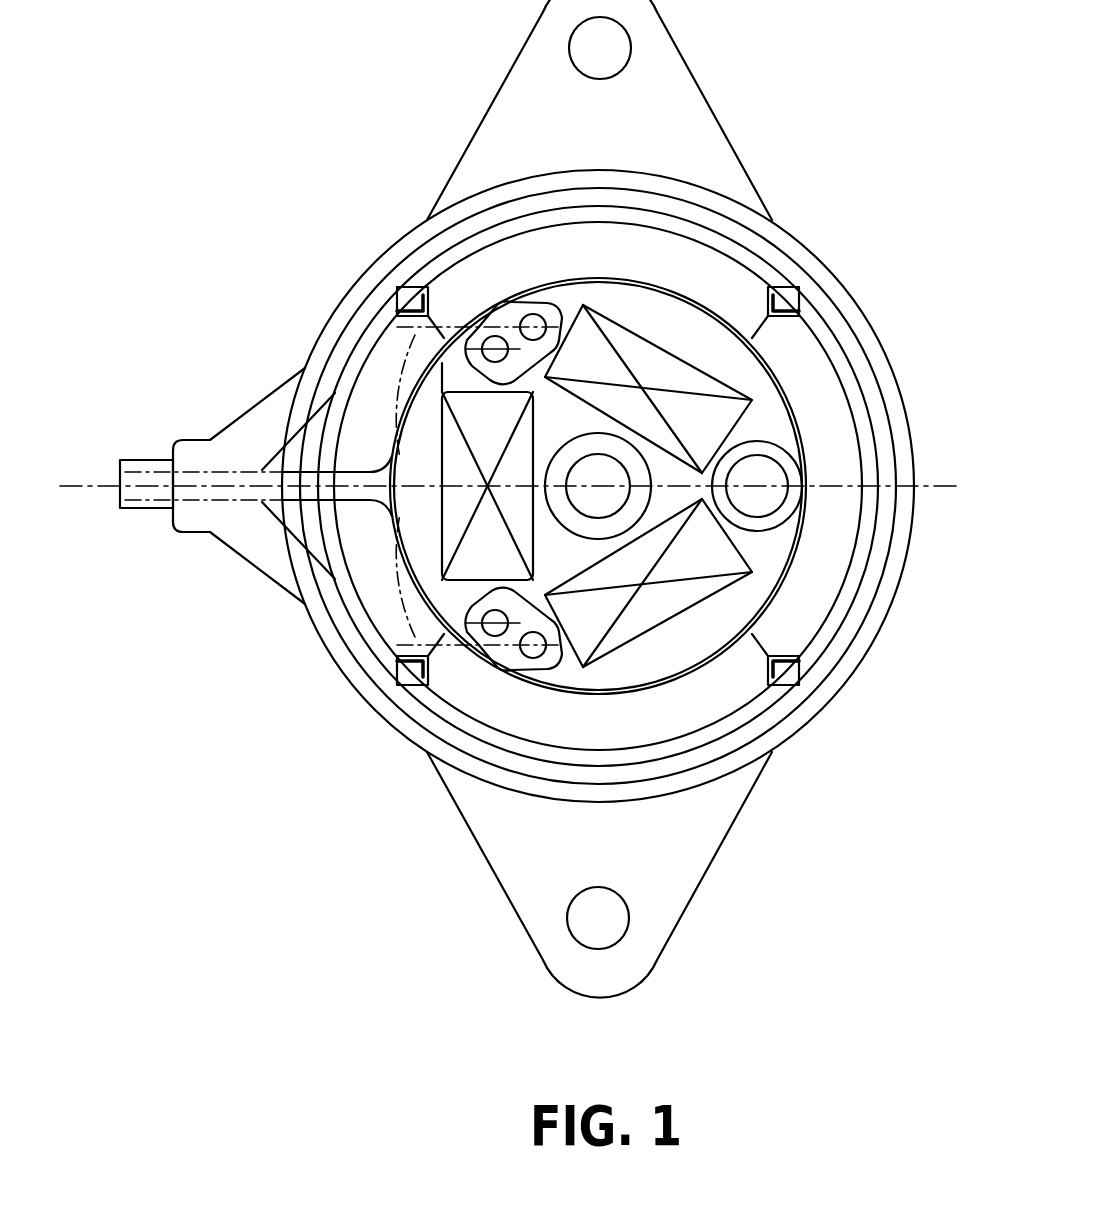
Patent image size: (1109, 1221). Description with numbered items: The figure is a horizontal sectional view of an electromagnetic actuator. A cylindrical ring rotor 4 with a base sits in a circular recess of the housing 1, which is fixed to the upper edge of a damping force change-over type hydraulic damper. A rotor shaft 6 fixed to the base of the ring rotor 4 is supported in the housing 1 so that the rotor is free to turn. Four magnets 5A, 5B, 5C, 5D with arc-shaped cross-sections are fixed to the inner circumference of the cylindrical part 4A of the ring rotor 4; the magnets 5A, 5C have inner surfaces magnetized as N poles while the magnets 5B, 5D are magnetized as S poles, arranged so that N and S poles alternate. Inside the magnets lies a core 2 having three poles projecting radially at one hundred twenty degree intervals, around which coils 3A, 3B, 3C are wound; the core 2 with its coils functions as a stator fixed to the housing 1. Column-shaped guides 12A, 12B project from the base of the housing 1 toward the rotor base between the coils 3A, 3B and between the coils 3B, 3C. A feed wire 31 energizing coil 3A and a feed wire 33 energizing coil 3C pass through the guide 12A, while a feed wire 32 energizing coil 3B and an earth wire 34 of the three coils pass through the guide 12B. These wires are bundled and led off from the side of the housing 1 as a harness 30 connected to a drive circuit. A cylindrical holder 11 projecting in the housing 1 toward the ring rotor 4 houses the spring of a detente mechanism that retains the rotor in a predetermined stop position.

The housing 1 is at (722, 100).
The core 2 is at (100, 478).
The coil 3A is at (725, 585).
The coil 3B is at (447, 443).
The coil 3C is at (703, 383).
The ring rotor 4 is at (817, 668).
The cylindrical part 4A is at (773, 707).
The magnet 5A is at (833, 570).
The magnet 5B is at (703, 713).
The magnet 5C is at (363, 410).
The magnet 5D is at (702, 262).
The rotor shaft 6 is at (593, 466).
The cylindrical holder 11 is at (793, 438).
The column-shaped guide 12A is at (497, 306).
The column-shaped guide 12B is at (493, 662).
The harness 30 is at (158, 460).
The feed wire 31 is at (533, 314).
The feed wire 32 is at (482, 623).
The feed wire 33 is at (482, 349).
The earth wire 34 is at (533, 658).